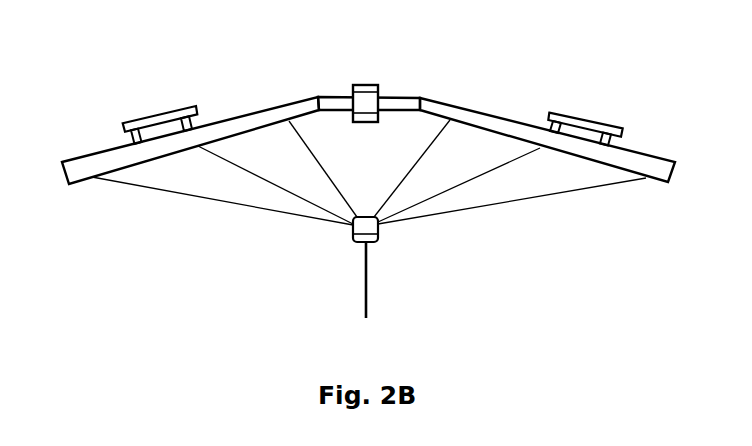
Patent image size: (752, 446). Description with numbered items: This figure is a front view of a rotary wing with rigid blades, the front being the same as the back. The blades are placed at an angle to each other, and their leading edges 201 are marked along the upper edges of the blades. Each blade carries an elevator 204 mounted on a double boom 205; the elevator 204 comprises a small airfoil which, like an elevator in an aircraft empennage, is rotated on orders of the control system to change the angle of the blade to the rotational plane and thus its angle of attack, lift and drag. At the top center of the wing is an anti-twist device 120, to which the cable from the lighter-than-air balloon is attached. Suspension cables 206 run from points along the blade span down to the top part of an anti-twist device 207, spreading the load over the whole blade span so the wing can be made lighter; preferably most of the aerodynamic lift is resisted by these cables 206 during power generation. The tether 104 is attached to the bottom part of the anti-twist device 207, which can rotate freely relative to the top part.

The tether 104 is at (367, 293).
The anti-twist device 120 is at (367, 83).
The leading edge 201 is at (285, 107).
The elevator 204 is at (165, 112).
The double boom 205 is at (132, 140).
The suspension cables 206 is at (277, 187).
The anti-twist device 207 is at (350, 238).